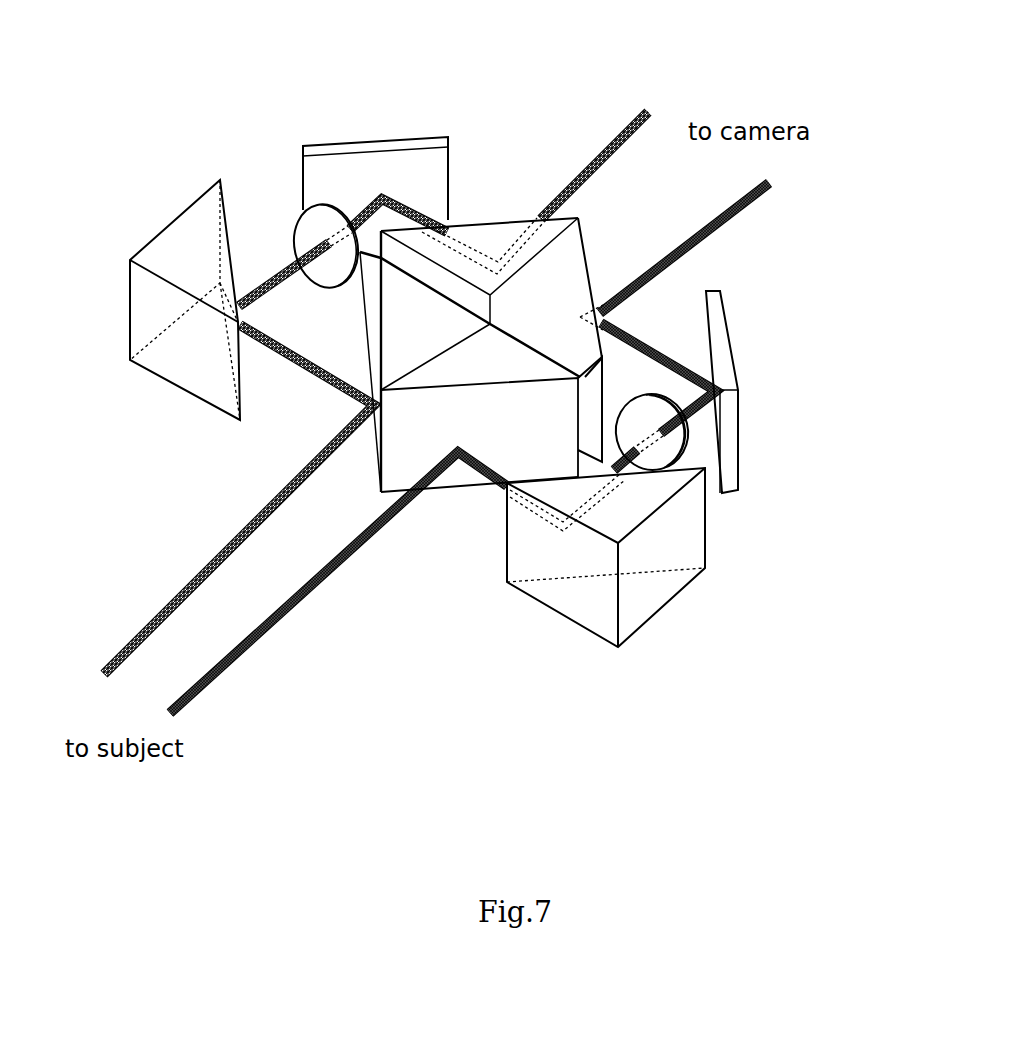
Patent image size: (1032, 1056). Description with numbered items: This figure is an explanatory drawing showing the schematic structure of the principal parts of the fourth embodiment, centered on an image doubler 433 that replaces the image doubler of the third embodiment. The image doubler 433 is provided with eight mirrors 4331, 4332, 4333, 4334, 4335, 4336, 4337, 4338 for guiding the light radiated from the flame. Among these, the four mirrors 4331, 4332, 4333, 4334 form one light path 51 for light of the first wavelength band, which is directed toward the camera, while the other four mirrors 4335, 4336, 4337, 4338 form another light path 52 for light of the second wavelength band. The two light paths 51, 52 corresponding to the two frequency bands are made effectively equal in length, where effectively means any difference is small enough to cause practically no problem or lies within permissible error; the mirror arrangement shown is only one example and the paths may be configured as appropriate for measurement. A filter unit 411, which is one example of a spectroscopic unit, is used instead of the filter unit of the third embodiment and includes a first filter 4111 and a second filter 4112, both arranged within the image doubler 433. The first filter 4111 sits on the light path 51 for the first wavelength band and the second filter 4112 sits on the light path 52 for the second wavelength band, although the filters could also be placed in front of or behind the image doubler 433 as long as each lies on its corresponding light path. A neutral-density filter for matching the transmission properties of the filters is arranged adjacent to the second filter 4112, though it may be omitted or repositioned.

The image doubler 433 is at (382, 93).
The mirror 4331 is at (373, 432).
The mirror 4332 is at (243, 372).
The mirror 4333 is at (449, 157).
The mirror 4334 is at (500, 218).
The mirror 4335 is at (453, 479).
The mirror 4336 is at (505, 540).
The mirror 4337 is at (706, 310).
The mirror 4338 is at (583, 246).
The filter unit 411 is at (521, 301).
The first filter 4111 is at (295, 228).
The second filter 4112 is at (688, 437).
The light path 51 is at (640, 110).
The light path 52 is at (770, 189).